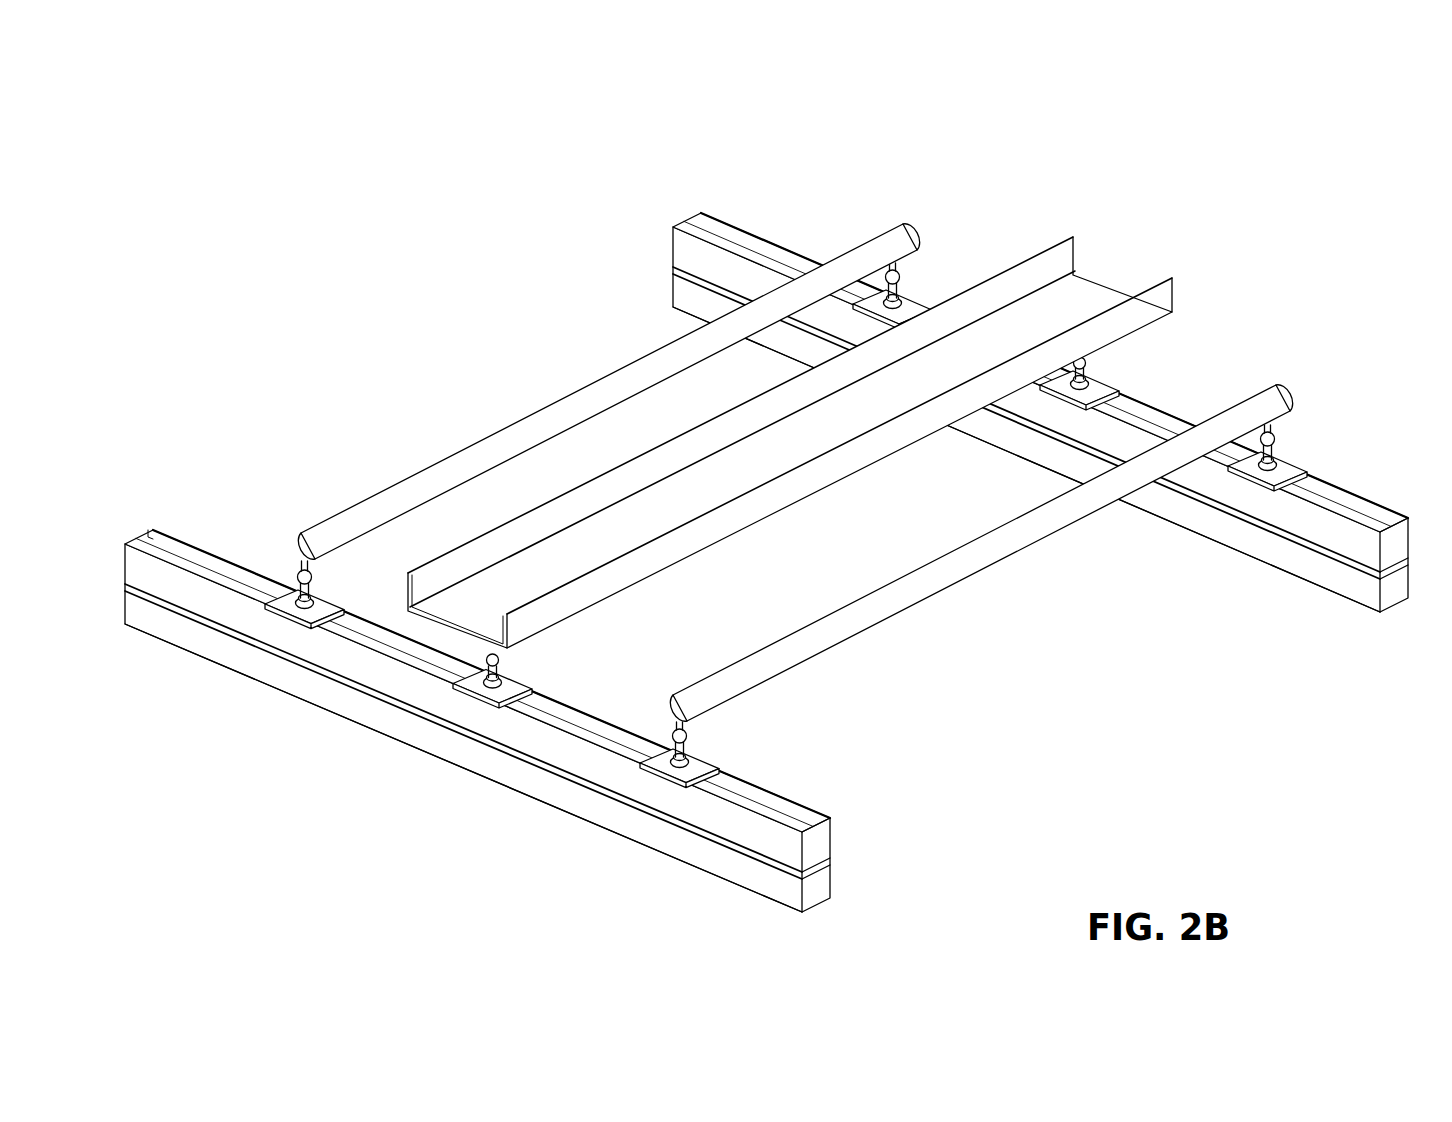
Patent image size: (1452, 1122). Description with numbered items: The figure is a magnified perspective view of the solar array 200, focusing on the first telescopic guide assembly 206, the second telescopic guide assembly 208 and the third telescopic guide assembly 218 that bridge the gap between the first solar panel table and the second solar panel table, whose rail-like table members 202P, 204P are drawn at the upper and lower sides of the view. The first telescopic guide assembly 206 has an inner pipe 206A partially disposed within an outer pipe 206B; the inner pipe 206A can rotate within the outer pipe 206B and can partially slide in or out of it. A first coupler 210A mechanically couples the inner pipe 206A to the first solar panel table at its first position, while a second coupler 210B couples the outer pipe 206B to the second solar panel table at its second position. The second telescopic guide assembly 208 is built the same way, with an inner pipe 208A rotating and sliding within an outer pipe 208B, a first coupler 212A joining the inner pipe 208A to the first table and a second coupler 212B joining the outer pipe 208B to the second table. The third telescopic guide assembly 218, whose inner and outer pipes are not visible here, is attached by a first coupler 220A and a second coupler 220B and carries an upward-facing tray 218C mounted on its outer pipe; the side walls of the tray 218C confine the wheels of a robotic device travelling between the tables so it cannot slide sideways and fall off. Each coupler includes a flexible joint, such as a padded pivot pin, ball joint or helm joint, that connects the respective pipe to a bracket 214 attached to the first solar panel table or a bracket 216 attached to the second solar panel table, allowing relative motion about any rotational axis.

The solar array 200 is at (1320, 100).
The first purlin 202P is at (1045, 408).
The second purlin 204P is at (477, 721).
The first telescopic guide assembly 206 is at (608, 346).
The inner pipe 206A is at (870, 257).
The outer pipe 206B is at (438, 475).
The second telescopic guide assembly 208 is at (987, 510).
The inner pipe 208A is at (1240, 412).
The outer pipe 208B is at (855, 623).
The first coupler 210A is at (917, 278).
The second coupler 210B is at (280, 568).
The first coupler 212A is at (1306, 431).
The second coupler 212B is at (710, 738).
The bracket 214 is at (358, 705).
The bracket 216 is at (1240, 540).
The third telescopic guide assembly 218 is at (828, 410).
The tray 218C is at (1163, 300).
The first coupler 220A is at (1105, 358).
The second coupler 220B is at (516, 657).